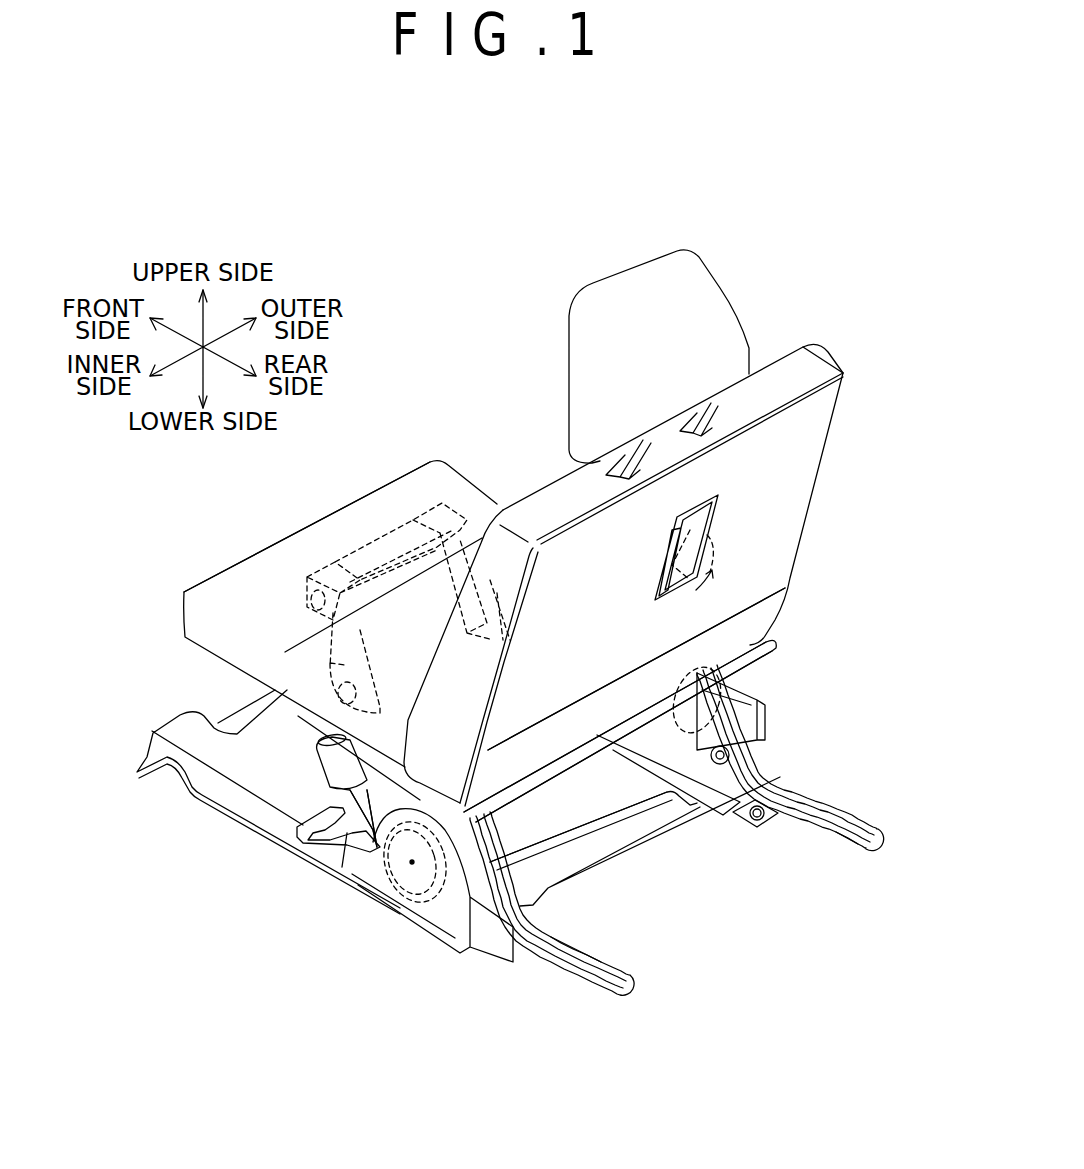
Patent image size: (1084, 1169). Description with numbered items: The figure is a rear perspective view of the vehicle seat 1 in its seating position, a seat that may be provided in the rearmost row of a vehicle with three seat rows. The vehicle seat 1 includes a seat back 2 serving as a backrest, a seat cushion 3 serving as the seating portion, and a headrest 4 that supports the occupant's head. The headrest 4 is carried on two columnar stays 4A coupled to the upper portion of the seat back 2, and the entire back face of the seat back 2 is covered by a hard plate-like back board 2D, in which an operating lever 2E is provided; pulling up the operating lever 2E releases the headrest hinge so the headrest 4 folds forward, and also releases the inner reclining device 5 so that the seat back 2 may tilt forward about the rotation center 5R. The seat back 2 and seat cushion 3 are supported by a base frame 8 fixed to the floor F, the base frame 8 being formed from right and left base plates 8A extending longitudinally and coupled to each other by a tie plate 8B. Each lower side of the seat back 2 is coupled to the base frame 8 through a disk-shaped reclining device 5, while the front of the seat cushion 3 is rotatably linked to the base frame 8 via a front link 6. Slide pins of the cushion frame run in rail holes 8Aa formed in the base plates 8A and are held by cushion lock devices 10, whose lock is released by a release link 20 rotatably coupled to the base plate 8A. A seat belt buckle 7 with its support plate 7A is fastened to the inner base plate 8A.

The vehicle seat 1 is at (437, 377).
The seat back 2 is at (551, 491).
The back board 2D is at (805, 412).
The operating lever 2E is at (690, 540).
The seat cushion 3 is at (264, 566).
The headrest 4 is at (727, 306).
The stays 4A is at (603, 446).
The reclining device 5 is at (392, 863).
The rotation center 5R is at (410, 866).
The front link 6 is at (330, 640).
The seat belt buckle 7 is at (318, 751).
The support plate 7A is at (342, 800).
The base frame 8 is at (697, 830).
The base plate 8A is at (493, 880).
The rail hole 8Aa is at (553, 950).
The tie plate 8B is at (660, 818).
The cushion lock device 10 is at (762, 655).
The release link 20 is at (636, 669).
The floor F is at (691, 880).